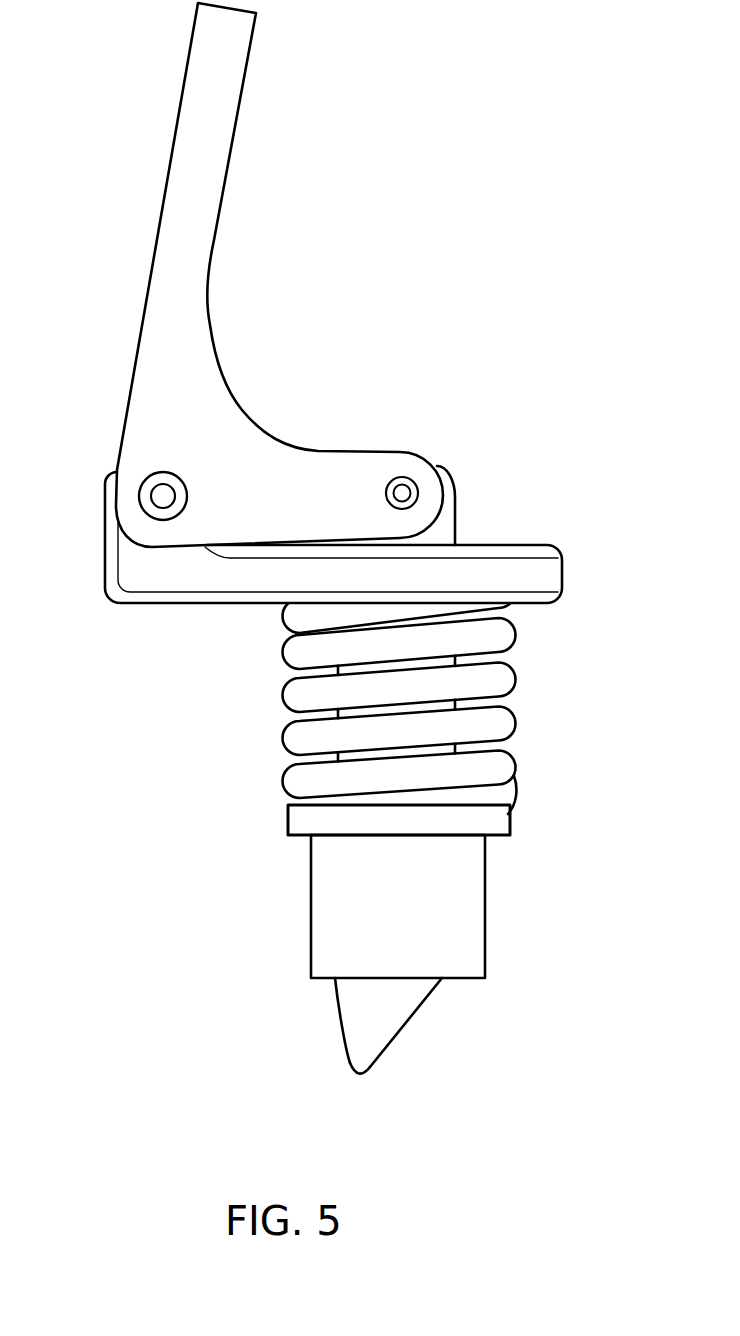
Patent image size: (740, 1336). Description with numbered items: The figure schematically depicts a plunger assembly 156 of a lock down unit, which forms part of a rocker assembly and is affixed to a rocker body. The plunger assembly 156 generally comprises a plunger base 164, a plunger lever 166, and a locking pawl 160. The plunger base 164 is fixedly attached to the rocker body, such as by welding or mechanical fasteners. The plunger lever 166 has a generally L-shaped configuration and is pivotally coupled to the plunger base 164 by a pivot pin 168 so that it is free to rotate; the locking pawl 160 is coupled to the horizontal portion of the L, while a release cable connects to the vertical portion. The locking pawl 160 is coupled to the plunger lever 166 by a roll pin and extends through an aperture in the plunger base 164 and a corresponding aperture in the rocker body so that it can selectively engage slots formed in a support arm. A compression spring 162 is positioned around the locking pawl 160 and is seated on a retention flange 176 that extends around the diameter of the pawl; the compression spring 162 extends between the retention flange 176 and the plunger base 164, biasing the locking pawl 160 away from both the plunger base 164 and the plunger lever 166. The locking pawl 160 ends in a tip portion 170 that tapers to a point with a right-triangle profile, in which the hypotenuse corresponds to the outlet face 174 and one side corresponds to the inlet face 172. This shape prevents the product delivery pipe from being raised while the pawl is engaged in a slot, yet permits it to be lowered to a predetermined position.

The plunger assembly 156 is at (348, 593).
The locking pawl 160 is at (427, 1003).
The compression spring 162 is at (512, 718).
The plunger base 164 is at (562, 578).
The plunger lever 166 is at (201, 60).
The pivot pin 168 is at (140, 496).
The tip portion 170 is at (397, 1123).
The inlet face 172 is at (464, 1022).
The outlet face 174 is at (276, 1020).
The retention flange 176 is at (295, 820).